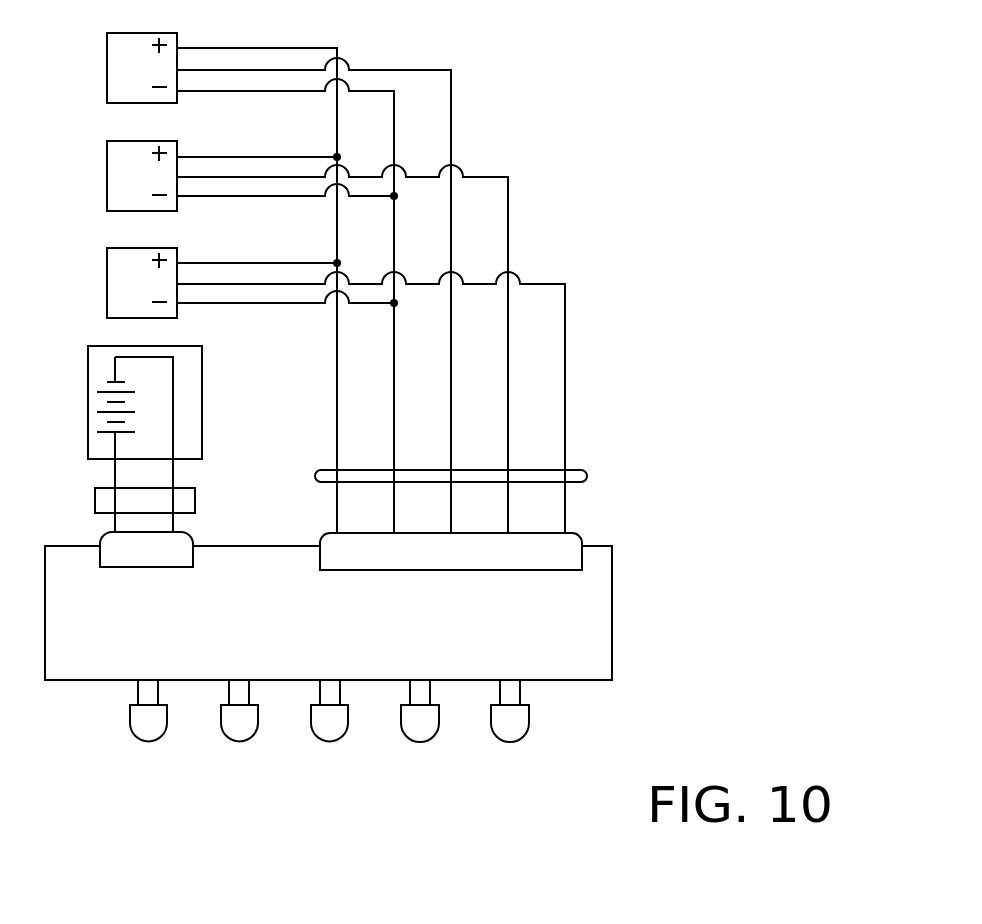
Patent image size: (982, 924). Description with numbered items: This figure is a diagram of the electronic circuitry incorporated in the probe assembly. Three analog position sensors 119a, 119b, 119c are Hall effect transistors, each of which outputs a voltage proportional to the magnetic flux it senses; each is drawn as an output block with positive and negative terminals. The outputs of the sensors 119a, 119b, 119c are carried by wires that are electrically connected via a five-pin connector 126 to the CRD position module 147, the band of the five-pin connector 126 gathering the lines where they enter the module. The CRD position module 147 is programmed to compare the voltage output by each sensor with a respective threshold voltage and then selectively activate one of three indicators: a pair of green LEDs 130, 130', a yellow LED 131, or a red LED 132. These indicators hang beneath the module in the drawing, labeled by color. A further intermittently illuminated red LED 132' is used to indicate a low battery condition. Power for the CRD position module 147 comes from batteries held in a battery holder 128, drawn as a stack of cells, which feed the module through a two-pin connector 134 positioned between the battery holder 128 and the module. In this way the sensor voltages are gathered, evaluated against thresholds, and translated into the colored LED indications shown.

The analog position sensor 119a is at (107, 97).
The analog position sensor 119b is at (107, 205).
The analog position sensor 119c is at (107, 313).
The battery holder 128 is at (202, 381).
The two-pin connector 134 is at (196, 499).
The five-pin connector 126 is at (587, 473).
The CRD position module 147 is at (613, 578).
The intermittently illuminated red LED 132' is at (108, 729).
The red LED 132 is at (199, 746).
The yellow LED 131 is at (314, 738).
The green LED 130 is at (457, 754).
The green LED 130' is at (555, 731).